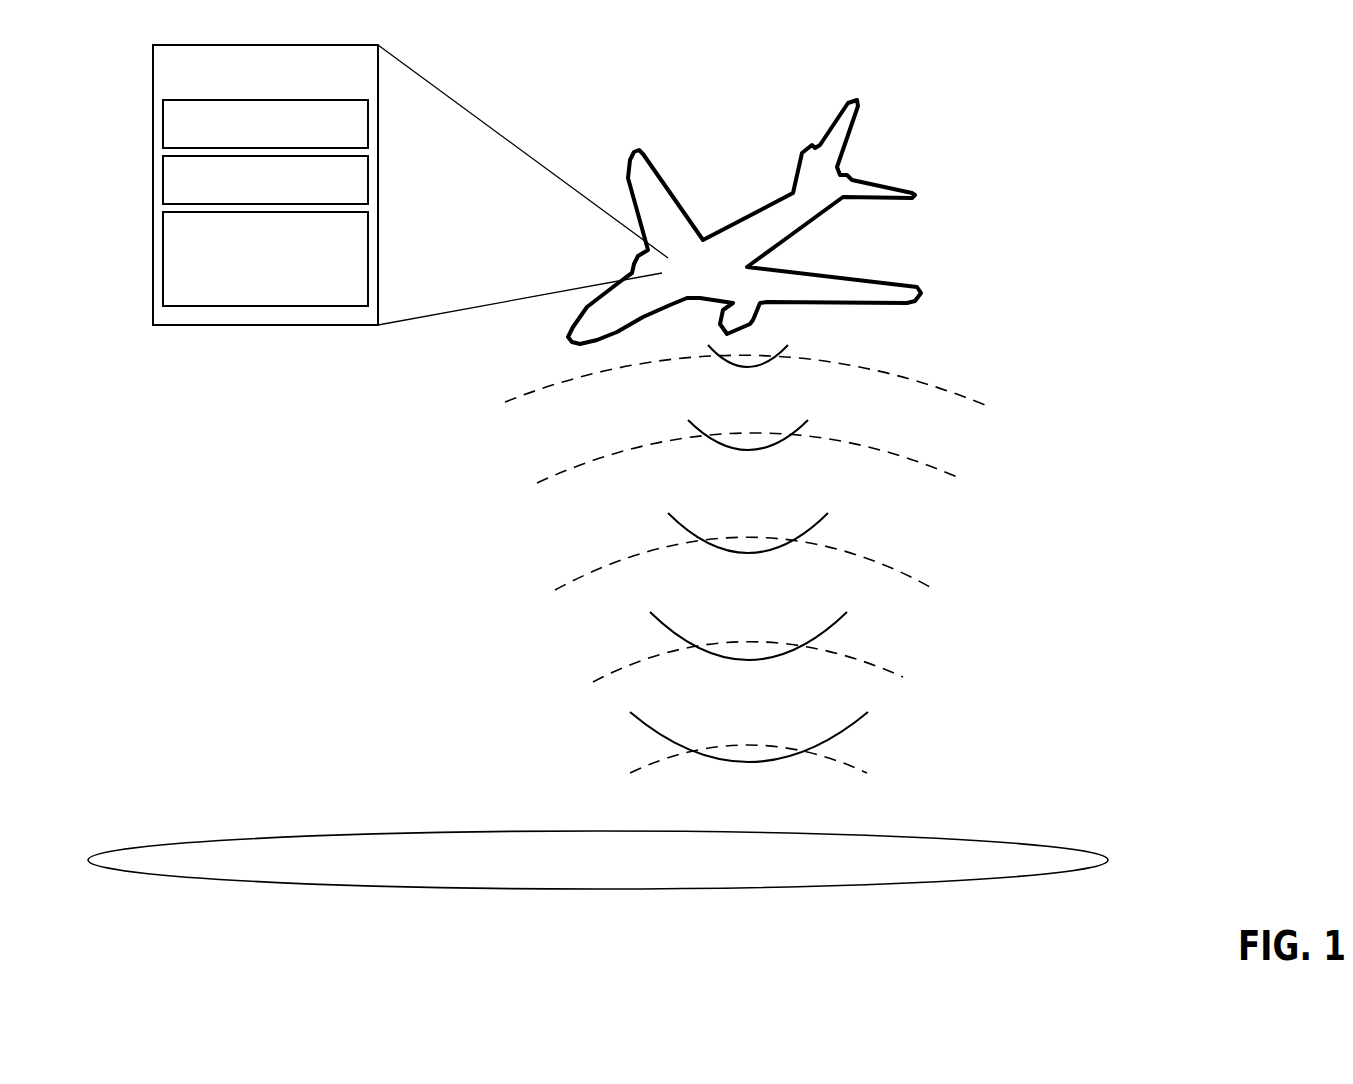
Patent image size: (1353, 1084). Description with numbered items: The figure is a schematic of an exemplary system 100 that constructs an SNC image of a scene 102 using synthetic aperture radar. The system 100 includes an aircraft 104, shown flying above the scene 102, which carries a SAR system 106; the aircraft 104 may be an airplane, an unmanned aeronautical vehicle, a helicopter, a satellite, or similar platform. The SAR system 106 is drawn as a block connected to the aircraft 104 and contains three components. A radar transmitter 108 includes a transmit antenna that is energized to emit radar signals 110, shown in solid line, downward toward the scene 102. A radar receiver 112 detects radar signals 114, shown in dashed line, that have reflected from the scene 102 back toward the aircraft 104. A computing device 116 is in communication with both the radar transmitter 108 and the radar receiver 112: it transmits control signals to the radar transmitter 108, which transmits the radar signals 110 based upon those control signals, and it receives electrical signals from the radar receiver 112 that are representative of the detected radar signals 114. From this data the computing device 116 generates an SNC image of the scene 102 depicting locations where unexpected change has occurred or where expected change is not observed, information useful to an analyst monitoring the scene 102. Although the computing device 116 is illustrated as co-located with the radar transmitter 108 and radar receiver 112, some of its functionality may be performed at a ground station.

The system 100 is at (1172, 110).
The scene 102 is at (598, 860).
The aircraft 104 is at (866, 236).
The SAR system 106 is at (266, 326).
The radar transmitter 108 is at (162, 118).
The radar signals 110 is at (778, 660).
The radar receiver 112 is at (265, 180).
The radar signals 114 is at (912, 565).
The computing device 116 is at (265, 259).